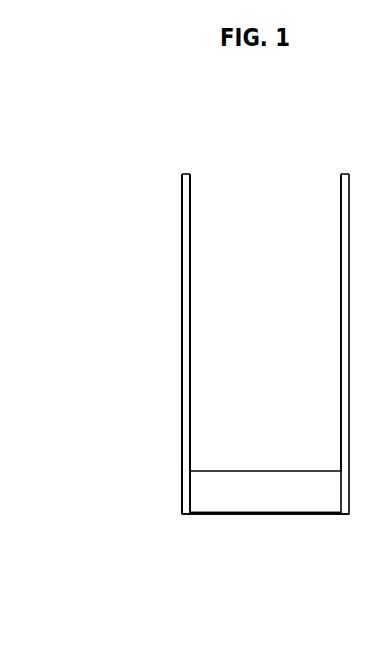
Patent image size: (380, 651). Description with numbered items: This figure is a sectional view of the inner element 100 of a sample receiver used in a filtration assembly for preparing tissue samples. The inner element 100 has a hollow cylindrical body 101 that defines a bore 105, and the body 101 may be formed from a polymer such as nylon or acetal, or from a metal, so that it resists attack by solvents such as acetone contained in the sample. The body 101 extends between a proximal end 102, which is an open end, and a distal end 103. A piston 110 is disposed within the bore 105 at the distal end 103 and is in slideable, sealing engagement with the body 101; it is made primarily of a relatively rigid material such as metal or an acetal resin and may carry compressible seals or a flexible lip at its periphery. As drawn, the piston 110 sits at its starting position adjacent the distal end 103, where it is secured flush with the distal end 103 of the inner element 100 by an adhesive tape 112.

The inner element 100 is at (170, 188).
The hollow cylindrical body 101 is at (190, 286).
The proximal end 102 is at (142, 216).
The distal end 103 is at (164, 491).
The bore 105 is at (269, 186).
The piston 110 is at (260, 485).
The adhesive tape 112 is at (223, 529).